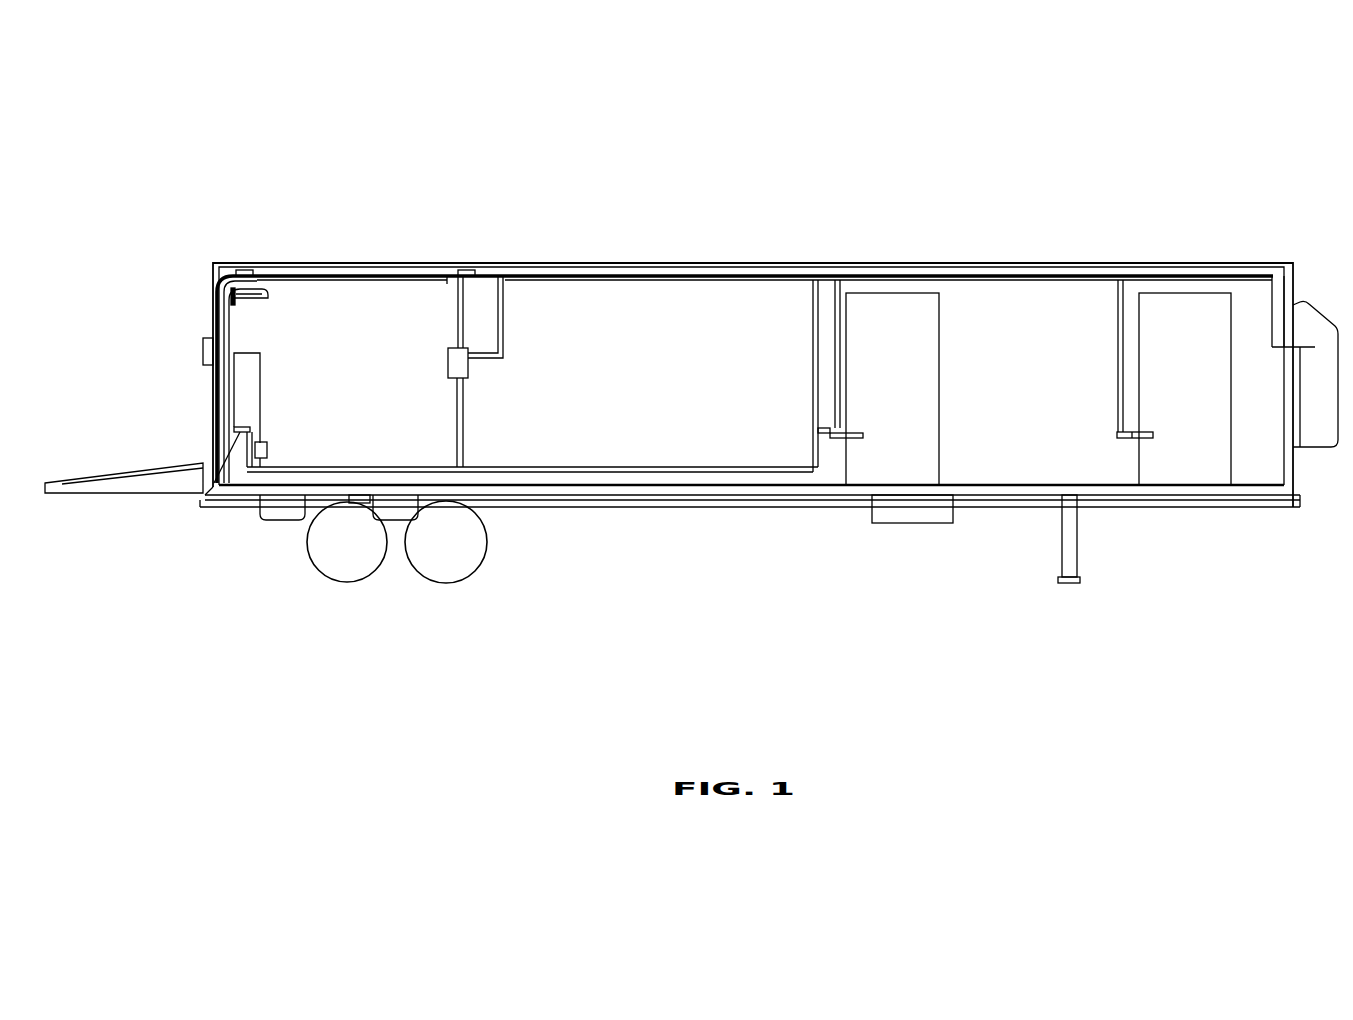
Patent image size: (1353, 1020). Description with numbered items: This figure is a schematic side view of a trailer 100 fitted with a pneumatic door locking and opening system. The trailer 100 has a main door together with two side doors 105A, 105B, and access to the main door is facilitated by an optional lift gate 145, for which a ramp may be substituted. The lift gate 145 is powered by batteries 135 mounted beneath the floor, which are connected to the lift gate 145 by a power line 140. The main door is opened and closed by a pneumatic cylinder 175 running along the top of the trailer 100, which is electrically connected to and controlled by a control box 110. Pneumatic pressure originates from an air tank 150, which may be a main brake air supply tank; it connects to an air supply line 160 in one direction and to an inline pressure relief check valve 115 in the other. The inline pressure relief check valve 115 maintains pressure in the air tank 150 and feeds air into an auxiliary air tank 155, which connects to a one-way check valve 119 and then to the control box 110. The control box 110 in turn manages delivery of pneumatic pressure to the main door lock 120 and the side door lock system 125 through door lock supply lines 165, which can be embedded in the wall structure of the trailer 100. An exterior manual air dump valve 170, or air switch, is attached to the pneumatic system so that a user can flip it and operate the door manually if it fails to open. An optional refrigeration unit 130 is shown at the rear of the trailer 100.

The trailer 100 is at (1163, 97).
The side door 105A is at (890, 365).
The side door 105B is at (1185, 365).
The control box 110 is at (456, 362).
The inline pressure relief check valve 115 is at (360, 503).
The one-way check valve 119 is at (261, 442).
The main door lock 120 is at (212, 494).
The side door lock system 125 is at (836, 438).
The refrigeration unit 130 is at (1305, 348).
The batteries 135 is at (920, 512).
The power line 140 is at (555, 507).
The lift gate 145 is at (113, 487).
The air tank 150 is at (393, 520).
The auxiliary air tank 155 is at (272, 520).
The air supply line 160 is at (1285, 507).
The door lock supply lines 165 is at (520, 468).
The exterior manual air dump valve 170 is at (198, 336).
The pneumatic cylinder 175 is at (345, 274).